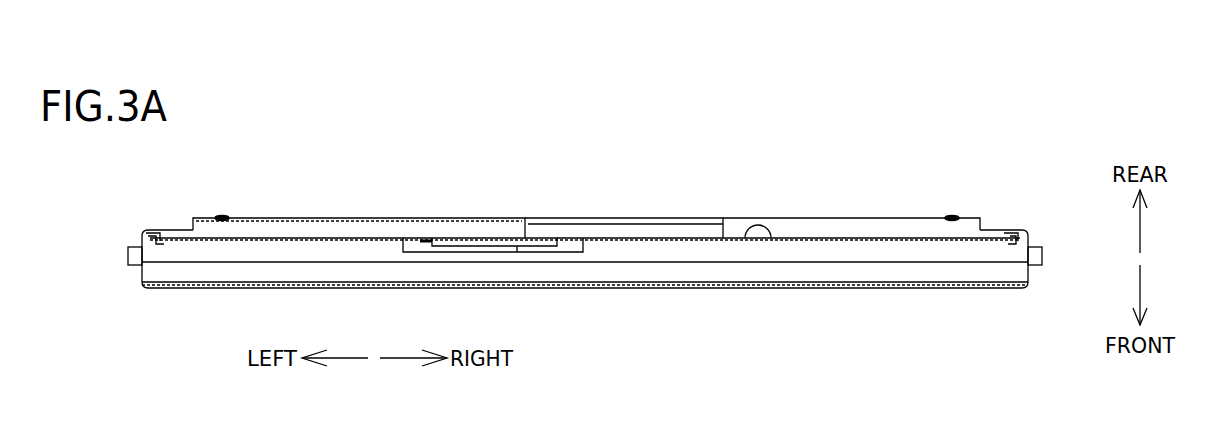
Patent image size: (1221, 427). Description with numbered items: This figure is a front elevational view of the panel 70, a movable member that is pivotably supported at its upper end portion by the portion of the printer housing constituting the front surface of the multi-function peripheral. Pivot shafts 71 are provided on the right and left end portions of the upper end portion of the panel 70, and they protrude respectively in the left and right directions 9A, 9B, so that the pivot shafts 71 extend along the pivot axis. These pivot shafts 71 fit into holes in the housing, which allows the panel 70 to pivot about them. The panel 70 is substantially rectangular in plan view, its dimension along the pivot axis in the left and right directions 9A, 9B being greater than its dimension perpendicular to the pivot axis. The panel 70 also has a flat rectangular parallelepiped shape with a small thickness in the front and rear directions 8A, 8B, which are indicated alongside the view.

The panel 70 is at (792, 203).
The pivot shaft 71 is at (128, 255).
The front direction 8A is at (1141, 291).
The rear direction 8B is at (1141, 226).
The left direction 9A is at (338, 353).
The right direction 9B is at (406, 353).